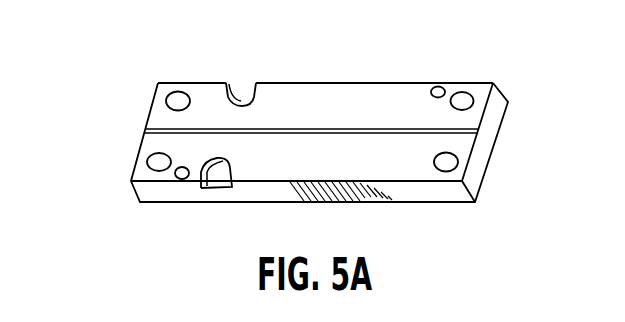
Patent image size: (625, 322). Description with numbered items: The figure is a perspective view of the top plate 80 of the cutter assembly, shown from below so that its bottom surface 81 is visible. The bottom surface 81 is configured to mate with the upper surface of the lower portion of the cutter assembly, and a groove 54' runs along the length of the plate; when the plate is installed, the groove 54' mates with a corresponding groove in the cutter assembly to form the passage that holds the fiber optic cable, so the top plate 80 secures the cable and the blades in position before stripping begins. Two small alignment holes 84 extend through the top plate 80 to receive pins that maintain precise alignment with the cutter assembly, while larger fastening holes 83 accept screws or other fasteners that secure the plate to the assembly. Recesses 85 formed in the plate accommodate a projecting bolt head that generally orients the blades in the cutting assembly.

The top plate 80 is at (507, 86).
The bottom surface 81 is at (345, 92).
The fastening holes 83 is at (180, 92).
The alignment holes 84 is at (440, 86).
The recesses 85 is at (243, 95).
The groove 54' is at (264, 129).